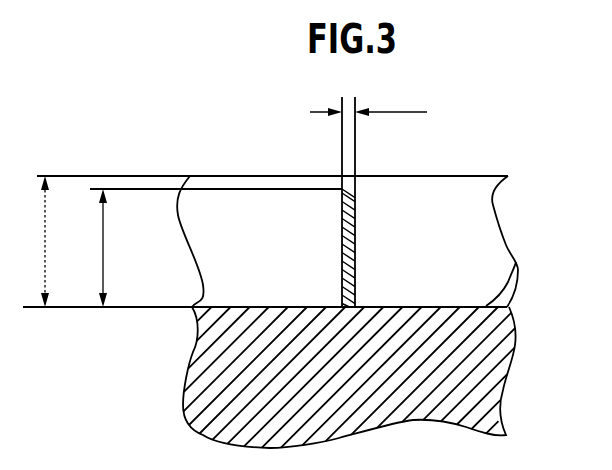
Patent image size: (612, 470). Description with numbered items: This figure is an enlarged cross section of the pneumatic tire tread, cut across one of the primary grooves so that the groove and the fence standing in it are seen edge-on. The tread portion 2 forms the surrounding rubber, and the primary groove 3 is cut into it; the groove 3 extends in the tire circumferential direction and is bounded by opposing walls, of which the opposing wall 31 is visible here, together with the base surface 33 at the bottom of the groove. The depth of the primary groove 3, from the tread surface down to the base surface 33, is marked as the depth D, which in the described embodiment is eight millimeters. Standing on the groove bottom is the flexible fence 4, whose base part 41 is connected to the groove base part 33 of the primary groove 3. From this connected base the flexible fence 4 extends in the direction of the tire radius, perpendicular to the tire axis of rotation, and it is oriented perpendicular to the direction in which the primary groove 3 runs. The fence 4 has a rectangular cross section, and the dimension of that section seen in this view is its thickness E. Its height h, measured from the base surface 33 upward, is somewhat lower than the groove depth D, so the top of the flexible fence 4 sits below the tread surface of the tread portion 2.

The tread portion 2 is at (279, 176).
The primary groove 3 is at (267, 221).
The flexible fence 4 is at (356, 223).
The opposing wall 31 is at (408, 249).
The base surface (base part) 33 is at (512, 261).
The base part 41 is at (342, 296).
The depth of the primary groove D is at (32, 241).
The height of the flexible fence h is at (93, 248).
The thickness of the flexible fence E is at (368, 98).